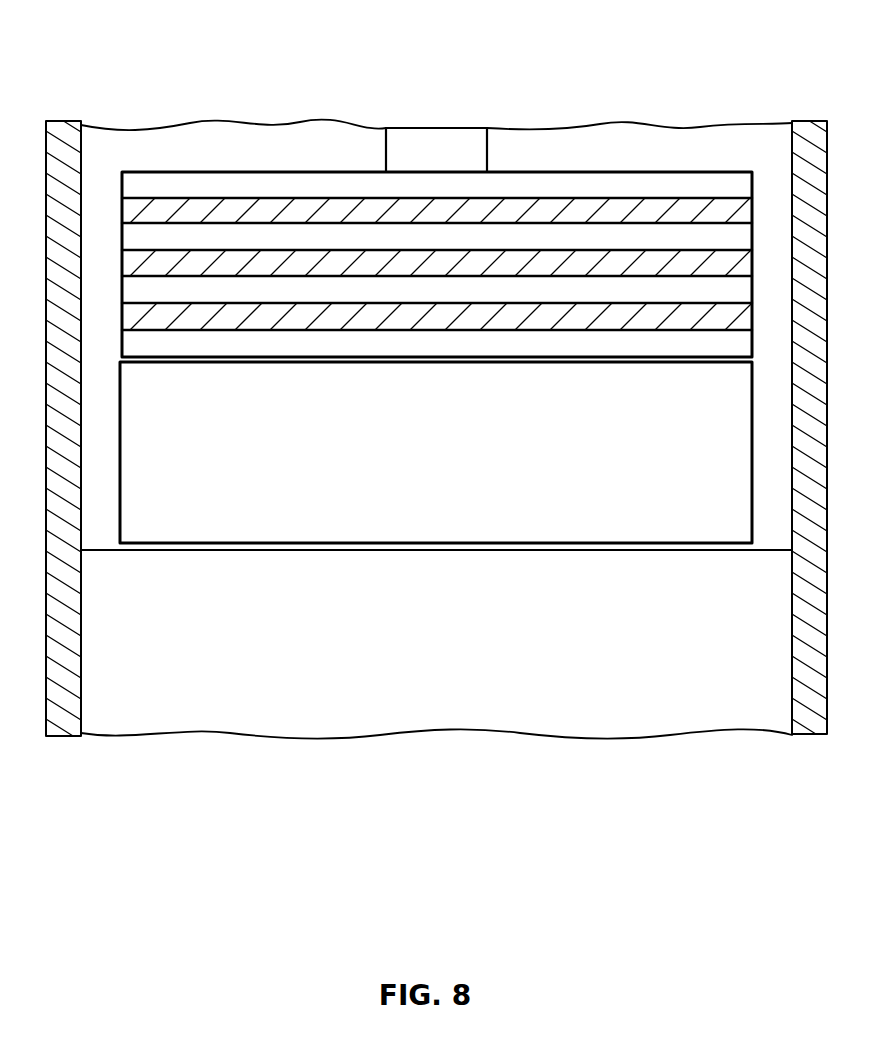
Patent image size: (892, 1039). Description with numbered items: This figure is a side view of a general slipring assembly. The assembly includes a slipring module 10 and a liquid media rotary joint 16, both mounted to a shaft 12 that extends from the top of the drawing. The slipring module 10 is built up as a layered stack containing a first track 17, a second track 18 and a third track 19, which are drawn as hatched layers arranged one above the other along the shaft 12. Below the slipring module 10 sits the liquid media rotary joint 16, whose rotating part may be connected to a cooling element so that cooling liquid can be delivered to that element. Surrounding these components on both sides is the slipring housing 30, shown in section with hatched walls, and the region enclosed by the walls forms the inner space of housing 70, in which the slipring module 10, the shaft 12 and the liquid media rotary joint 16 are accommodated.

The slipring module 10 is at (423, 208).
The shaft 12 is at (436, 147).
The liquid media rotary joint 16 is at (405, 457).
The first track 17 is at (535, 208).
The second track 18 is at (602, 265).
The third track 19 is at (672, 320).
The slipring housing 30 is at (62, 714).
The inner space of housing 70 is at (348, 770).